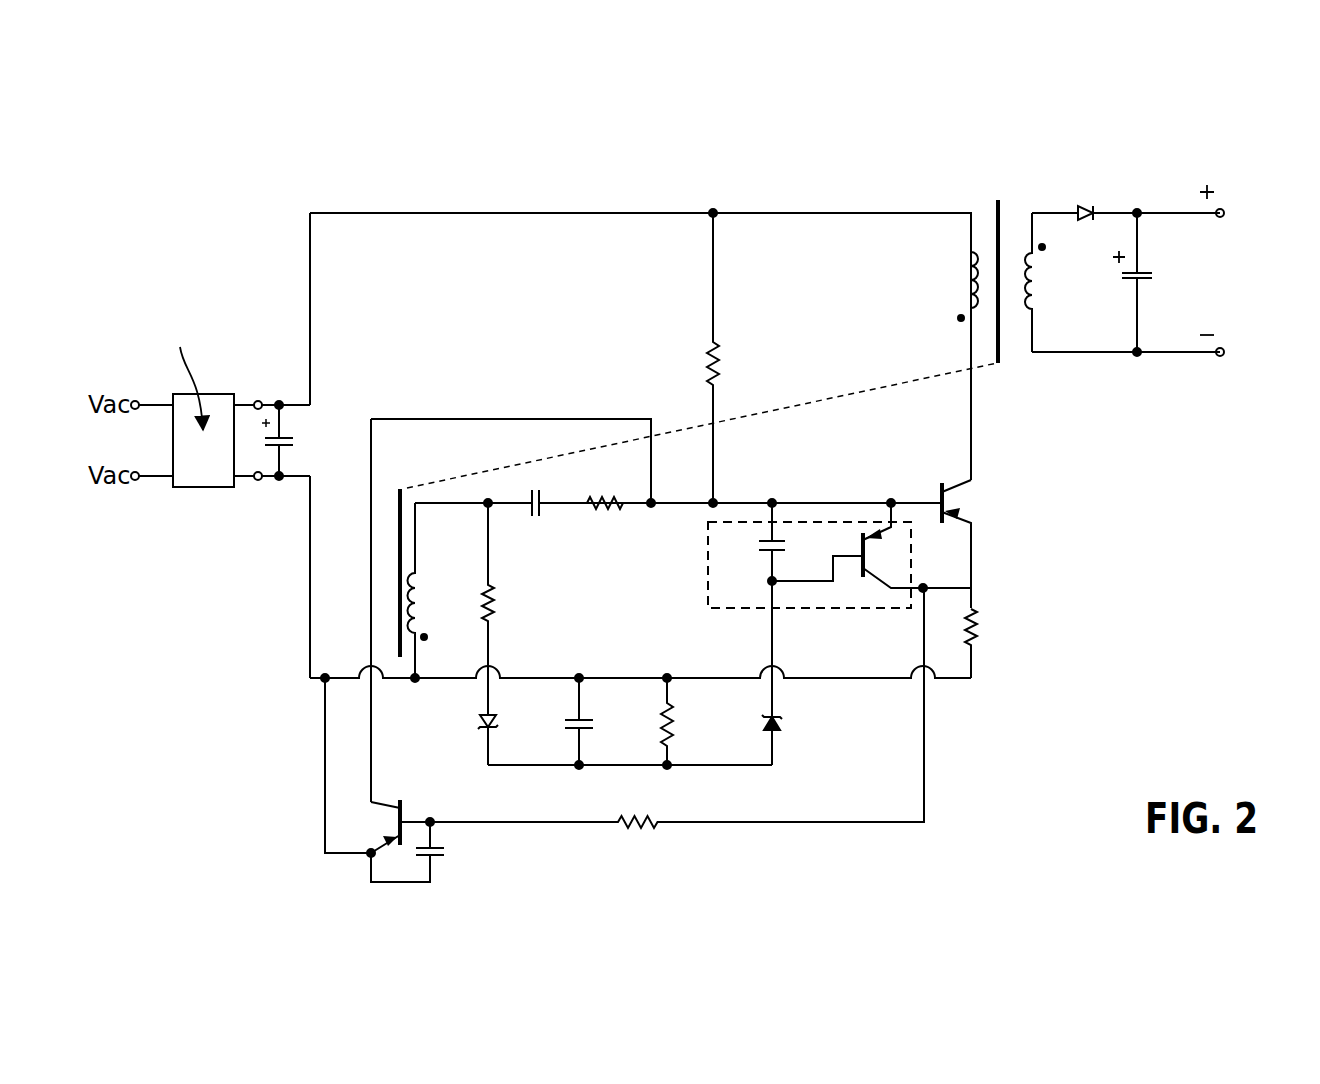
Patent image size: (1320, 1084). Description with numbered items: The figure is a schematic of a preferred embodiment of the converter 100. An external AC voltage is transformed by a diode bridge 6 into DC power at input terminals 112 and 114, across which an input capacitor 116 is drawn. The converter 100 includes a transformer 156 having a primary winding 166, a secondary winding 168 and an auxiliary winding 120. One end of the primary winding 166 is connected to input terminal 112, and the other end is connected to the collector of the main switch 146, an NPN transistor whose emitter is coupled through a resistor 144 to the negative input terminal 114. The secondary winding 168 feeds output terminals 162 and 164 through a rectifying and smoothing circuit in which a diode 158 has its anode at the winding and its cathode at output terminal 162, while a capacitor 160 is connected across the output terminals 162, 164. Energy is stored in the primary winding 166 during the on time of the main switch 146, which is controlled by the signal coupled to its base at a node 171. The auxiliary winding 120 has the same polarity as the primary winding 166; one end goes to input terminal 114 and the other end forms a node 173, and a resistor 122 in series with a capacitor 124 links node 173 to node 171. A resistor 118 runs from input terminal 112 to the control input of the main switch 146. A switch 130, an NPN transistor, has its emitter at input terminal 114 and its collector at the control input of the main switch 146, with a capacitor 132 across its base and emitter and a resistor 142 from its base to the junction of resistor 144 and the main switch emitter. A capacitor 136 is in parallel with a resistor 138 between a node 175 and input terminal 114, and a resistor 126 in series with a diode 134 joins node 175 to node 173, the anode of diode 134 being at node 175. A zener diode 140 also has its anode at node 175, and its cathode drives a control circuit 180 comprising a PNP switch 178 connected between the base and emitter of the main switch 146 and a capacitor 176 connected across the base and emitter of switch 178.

The diode bridge 6 is at (211, 473).
The converter 100 is at (330, 176).
The input terminal 112 is at (256, 400).
The input terminal 114 is at (258, 482).
The input filter capacitor 116 is at (294, 437).
The resistor 118 is at (707, 352).
The auxiliary winding 120 is at (416, 593).
The resistor 122 is at (624, 506).
The capacitor 124 is at (540, 514).
The resistor 126 is at (495, 603).
The switch 130 is at (404, 808).
The capacitor 132 is at (440, 860).
The diode 134 is at (480, 722).
The capacitor 136 is at (564, 722).
The resistor 138 is at (661, 720).
The zener diode 140 is at (784, 724).
The resistor 142 is at (640, 834).
The resistor 144 is at (979, 621).
The main switch 146 is at (955, 500).
The transformer 156 is at (995, 205).
The diode 158 is at (1076, 204).
The capacitor 160 is at (1143, 270).
The output terminal 162 is at (1222, 205).
The output terminal 164 is at (1216, 360).
The primary winding 166 is at (968, 268).
The secondary winding 168 is at (1038, 295).
The node 171 is at (772, 498).
The node 173 is at (487, 498).
The node 175 is at (670, 769).
The capacitor 176 is at (768, 554).
The switch 178 is at (877, 578).
The control circuit 180 is at (708, 606).